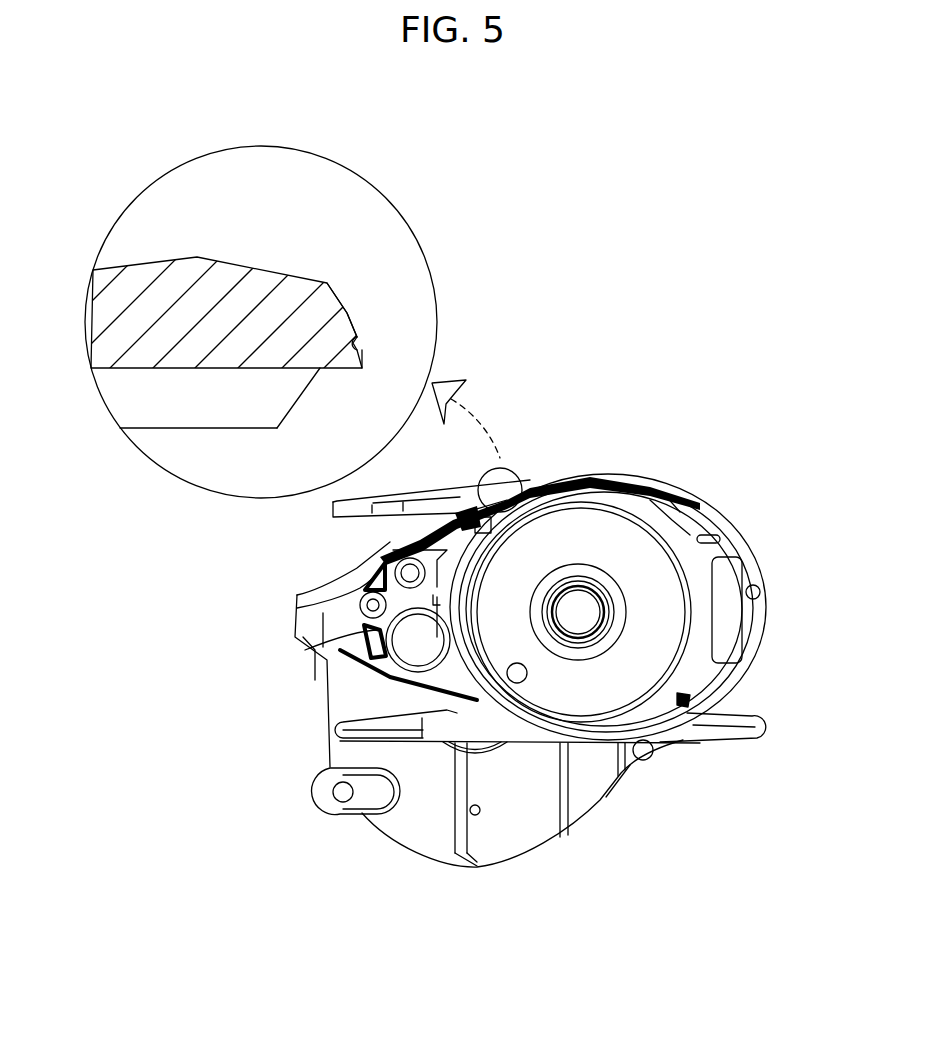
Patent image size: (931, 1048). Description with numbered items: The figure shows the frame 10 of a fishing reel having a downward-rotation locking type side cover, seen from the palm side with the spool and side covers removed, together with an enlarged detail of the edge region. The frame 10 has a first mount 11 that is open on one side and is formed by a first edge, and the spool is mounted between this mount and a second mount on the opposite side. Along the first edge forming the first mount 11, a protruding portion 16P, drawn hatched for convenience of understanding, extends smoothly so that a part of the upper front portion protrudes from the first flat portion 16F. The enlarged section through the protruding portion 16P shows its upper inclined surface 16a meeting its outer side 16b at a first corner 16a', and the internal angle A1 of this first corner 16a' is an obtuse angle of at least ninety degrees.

The frame 10 is at (122, 184).
The first mount 11 is at (657, 613).
The first flat portion 16F is at (560, 853).
The protruding portion 16P is at (270, 297).
The upper inclined surface 16a is at (338, 282).
The first corner 16a' is at (379, 306).
The outer side 16b is at (362, 358).
The internal angle A1 is at (353, 343).